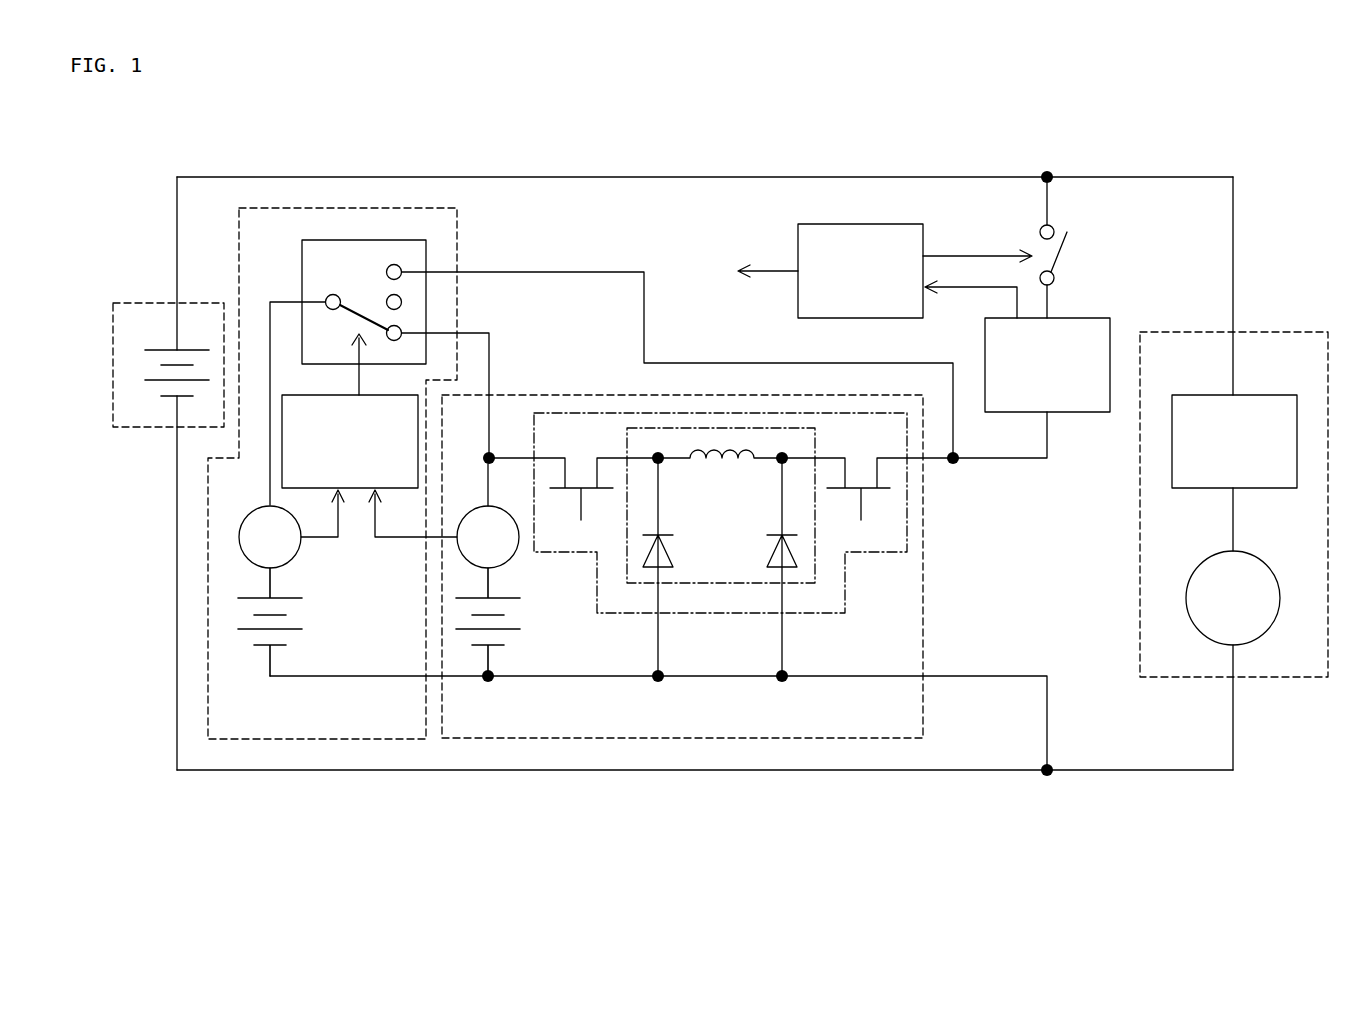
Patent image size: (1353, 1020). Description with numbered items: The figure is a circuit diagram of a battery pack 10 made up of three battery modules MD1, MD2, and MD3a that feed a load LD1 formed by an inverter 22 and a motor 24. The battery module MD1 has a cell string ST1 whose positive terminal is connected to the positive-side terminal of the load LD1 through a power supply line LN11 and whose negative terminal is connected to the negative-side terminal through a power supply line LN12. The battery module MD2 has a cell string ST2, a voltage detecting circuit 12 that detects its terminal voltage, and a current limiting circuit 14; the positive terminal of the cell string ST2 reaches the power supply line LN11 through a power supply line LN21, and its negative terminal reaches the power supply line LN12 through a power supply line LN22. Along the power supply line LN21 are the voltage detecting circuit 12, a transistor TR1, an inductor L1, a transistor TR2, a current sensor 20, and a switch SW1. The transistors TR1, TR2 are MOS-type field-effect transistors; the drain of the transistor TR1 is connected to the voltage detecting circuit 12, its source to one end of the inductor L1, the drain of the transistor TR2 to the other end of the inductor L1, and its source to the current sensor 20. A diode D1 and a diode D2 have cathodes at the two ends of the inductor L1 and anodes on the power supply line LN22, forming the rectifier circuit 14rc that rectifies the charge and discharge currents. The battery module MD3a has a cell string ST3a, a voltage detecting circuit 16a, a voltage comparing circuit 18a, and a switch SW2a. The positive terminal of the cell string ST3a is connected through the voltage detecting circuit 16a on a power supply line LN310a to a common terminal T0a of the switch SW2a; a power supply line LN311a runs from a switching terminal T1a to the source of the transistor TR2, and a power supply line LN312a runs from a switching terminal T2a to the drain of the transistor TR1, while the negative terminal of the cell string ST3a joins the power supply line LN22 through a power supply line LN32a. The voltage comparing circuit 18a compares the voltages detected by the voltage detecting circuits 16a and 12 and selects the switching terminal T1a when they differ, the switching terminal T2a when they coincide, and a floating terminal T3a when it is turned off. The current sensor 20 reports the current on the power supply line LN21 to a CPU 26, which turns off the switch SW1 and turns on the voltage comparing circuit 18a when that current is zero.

The battery pack 10 is at (766, 150).
The power supply line LN11 is at (938, 175).
The power supply line LN12 is at (948, 773).
The battery module MD1 is at (150, 432).
The cell string ST1 is at (166, 360).
The battery module MD3a is at (307, 732).
The switch SW2a is at (373, 238).
The common terminal T0a is at (335, 312).
The switching terminal T1a is at (400, 262).
The switching terminal T2a is at (400, 325).
The floating terminal T3a is at (383, 300).
The power supply line LN310a is at (285, 300).
The power supply line LN311a is at (568, 268).
The power supply line LN312a is at (530, 362).
The voltage comparing circuit 18a is at (353, 493).
The voltage detecting circuit 16a is at (295, 560).
The cell string ST3a is at (300, 622).
The power supply line LN32a is at (363, 680).
The voltage detecting circuit 12 is at (512, 555).
The cell string ST2 is at (511, 622).
The battery module MD2 is at (884, 726).
The current limiting circuit 14 is at (738, 611).
The rectifier circuit 14rc is at (798, 582).
The transistor TR1 is at (573, 478).
The transistor TR2 is at (867, 478).
The inductor L1 is at (805, 476).
The diode D1 is at (678, 570).
The diode D2 is at (762, 570).
The power supply line LN21 is at (995, 462).
The power supply line LN22 is at (975, 672).
The CPU 26 is at (795, 250).
The switch SW1 is at (1070, 258).
The current sensor 20 is at (1078, 415).
The load LD1 is at (1192, 667).
The inverter 22 is at (1266, 394).
The motor 24 is at (1260, 560).